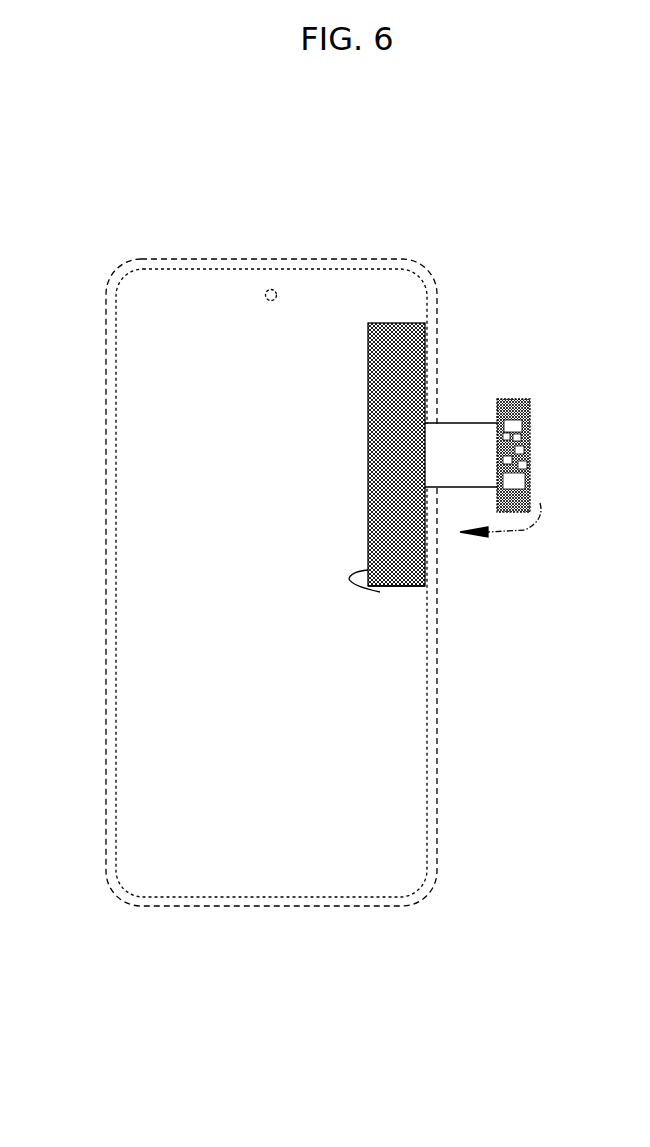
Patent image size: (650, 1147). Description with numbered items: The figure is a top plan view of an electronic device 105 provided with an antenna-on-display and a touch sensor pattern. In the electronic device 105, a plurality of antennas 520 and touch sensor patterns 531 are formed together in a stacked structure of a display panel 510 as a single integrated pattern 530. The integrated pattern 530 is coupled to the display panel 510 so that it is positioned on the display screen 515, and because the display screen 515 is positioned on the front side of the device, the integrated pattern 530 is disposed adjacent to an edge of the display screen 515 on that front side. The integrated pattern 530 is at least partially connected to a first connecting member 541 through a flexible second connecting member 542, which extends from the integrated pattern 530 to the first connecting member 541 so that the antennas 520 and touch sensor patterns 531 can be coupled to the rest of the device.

The electronic device 105 is at (434, 235).
The display panel 510 is at (116, 800).
The display screen 515 is at (172, 878).
The antennas 520 is at (425, 584).
The integrated pattern 530 is at (400, 312).
The touch sensor patterns 531 is at (380, 592).
The first connecting member 541 is at (512, 399).
The second connecting member 542 is at (461, 422).